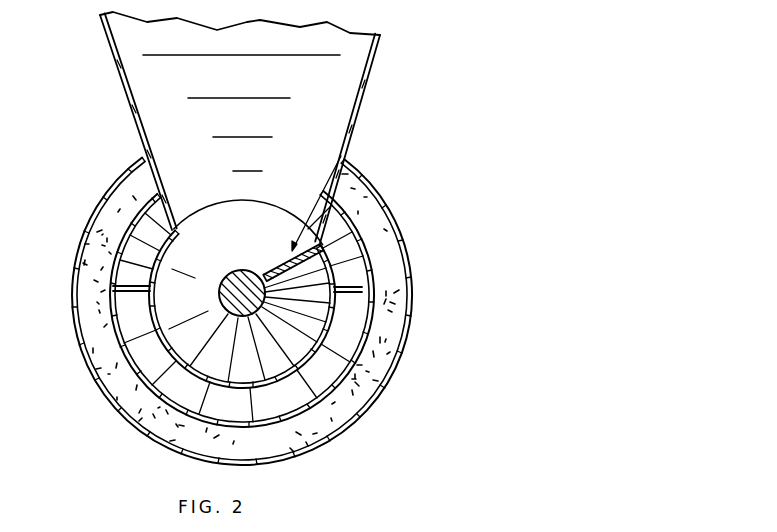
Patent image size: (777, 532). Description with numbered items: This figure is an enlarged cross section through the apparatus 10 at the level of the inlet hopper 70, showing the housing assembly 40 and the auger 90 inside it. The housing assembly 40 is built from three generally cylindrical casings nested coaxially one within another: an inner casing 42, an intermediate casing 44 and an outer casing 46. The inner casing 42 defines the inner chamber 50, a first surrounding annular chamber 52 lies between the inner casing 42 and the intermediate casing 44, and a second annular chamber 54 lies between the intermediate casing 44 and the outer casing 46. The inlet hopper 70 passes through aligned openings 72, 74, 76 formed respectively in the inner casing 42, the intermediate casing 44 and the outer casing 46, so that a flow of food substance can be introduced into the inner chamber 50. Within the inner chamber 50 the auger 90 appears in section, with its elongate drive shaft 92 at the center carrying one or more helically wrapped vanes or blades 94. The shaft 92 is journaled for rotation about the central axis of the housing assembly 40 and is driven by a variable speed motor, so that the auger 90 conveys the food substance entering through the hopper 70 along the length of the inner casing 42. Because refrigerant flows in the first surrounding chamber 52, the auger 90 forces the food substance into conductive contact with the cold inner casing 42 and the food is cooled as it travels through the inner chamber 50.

The rotary apparatus 10 is at (490, 133).
The housing assembly 40 is at (383, 188).
The inner casing 42 is at (151, 290).
The intermediate casing 44 is at (77, 291).
The outer casing 46 is at (123, 263).
The inner chamber 50 is at (224, 369).
The first surrounding annular chamber 52 is at (158, 366).
The second annular chamber 54 is at (112, 361).
The inlet hopper 70 is at (281, 131).
The opening 72 is at (176, 230).
The opening 74 is at (158, 194).
The opening 76 is at (142, 157).
The auger 90 is at (346, 161).
The drive shaft 92 is at (222, 276).
The helically wrapped vanes or blades 94 is at (267, 273).